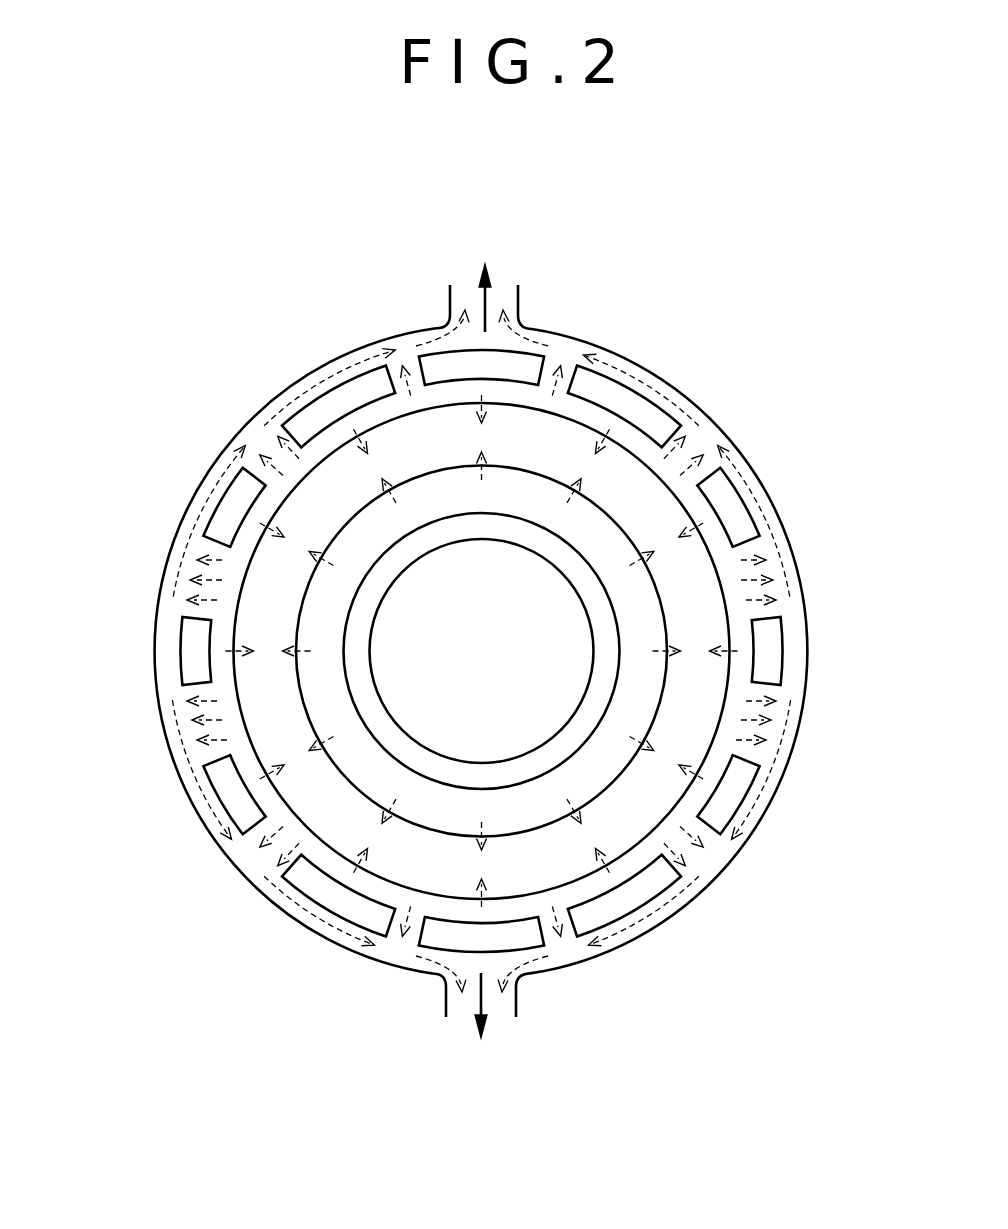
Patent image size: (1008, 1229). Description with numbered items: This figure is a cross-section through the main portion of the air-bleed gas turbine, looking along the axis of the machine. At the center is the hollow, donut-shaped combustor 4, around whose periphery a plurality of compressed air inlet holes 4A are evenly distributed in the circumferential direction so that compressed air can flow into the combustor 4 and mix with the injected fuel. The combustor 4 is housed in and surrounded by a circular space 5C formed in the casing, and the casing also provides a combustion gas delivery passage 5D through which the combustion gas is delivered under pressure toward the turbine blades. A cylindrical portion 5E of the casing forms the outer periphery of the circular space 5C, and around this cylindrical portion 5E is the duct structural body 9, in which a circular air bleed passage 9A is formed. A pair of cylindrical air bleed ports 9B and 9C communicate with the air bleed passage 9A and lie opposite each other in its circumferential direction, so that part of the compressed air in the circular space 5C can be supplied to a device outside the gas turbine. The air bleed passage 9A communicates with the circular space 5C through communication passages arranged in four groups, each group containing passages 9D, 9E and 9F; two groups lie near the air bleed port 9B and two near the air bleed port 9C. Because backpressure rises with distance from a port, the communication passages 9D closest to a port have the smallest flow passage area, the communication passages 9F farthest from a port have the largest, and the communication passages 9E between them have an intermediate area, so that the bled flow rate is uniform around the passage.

The combustor 4 is at (590, 425).
The compressed air inlet holes 4A is at (392, 813).
The circular space 5C is at (700, 795).
The combustion gas delivery passage 5D is at (570, 740).
The cylindrical portion 5E is at (240, 793).
The duct structural body 9 is at (748, 463).
The circular air bleed passage 9A is at (168, 625).
The air bleed port 9B is at (518, 297).
The air bleed port 9C is at (515, 1003).
The communication passages 9D is at (412, 375).
The communication passages 9E is at (273, 452).
The communication passages 9F is at (197, 568).